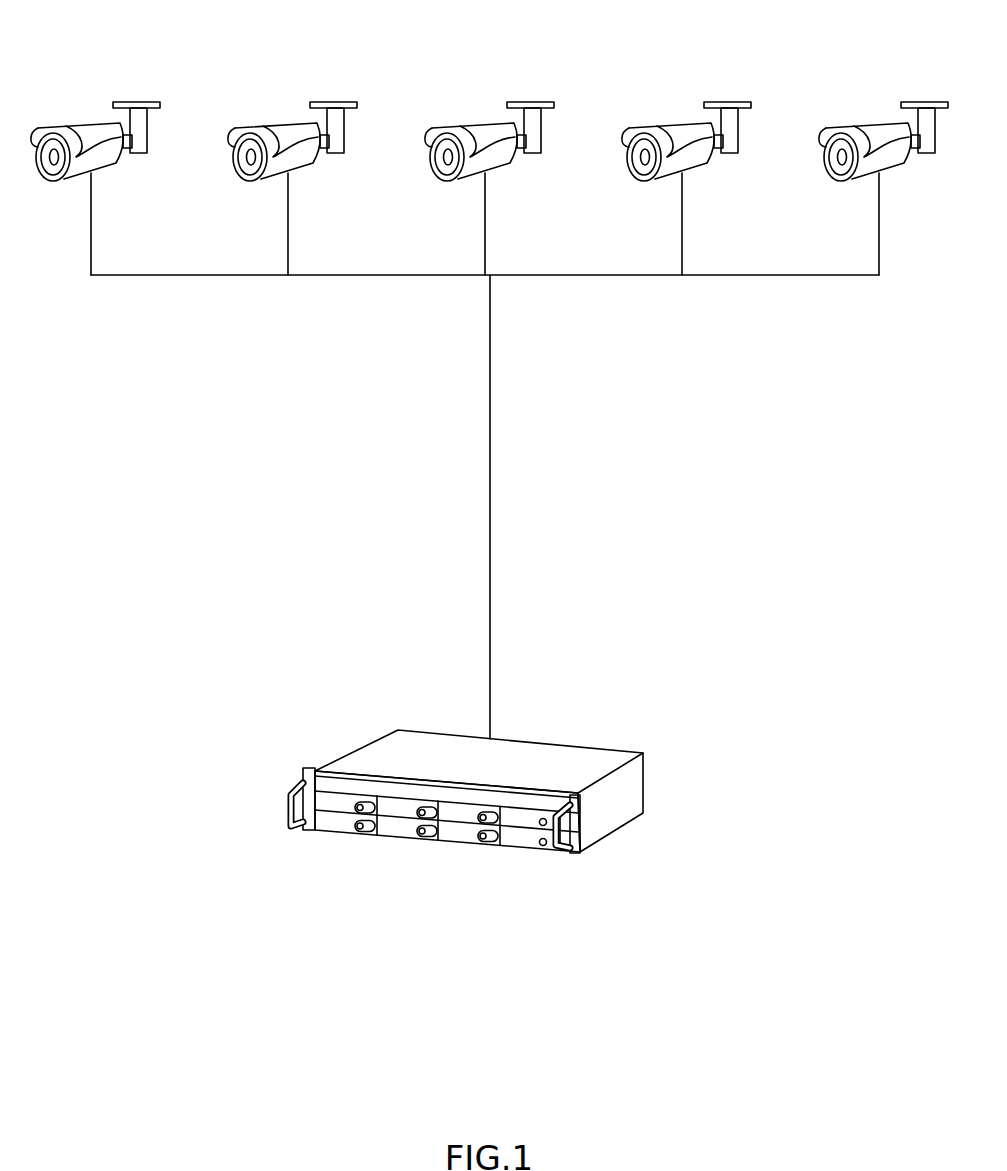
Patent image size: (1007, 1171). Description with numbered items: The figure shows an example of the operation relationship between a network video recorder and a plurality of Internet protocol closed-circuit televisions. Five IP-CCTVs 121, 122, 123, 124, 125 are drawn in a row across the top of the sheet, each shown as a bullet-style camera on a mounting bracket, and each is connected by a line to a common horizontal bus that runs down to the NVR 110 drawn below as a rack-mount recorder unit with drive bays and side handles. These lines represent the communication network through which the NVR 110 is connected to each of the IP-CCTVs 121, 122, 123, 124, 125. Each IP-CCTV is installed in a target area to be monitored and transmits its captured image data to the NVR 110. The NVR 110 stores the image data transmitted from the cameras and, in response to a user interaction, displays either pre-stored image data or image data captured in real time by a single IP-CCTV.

The network video recorder (NVR) 110 is at (583, 747).
The IP-CCTV 121 is at (83, 127).
The IP-CCTV 122 is at (280, 127).
The IP-CCTV 123 is at (477, 127).
The IP-CCTV 124 is at (674, 127).
The IP-CCTV 125 is at (871, 127).